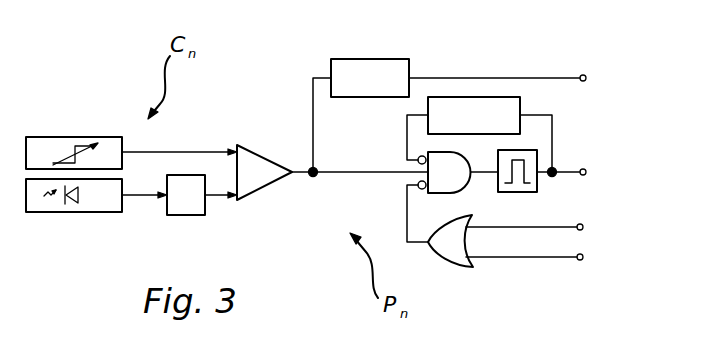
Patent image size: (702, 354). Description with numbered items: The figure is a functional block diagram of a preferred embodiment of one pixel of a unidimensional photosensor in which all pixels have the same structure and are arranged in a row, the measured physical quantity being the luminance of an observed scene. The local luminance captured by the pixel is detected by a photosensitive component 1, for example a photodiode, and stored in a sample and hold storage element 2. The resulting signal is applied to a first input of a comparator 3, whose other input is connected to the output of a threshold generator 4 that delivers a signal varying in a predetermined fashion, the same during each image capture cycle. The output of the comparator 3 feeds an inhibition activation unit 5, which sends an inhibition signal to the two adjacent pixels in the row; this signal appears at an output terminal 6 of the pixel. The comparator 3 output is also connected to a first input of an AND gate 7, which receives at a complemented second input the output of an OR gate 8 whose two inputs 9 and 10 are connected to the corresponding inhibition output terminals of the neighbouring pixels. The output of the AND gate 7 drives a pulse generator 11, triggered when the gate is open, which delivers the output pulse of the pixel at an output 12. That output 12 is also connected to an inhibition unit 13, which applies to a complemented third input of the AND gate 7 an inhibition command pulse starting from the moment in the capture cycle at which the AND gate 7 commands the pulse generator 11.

The photosensitive component 1 is at (97, 205).
The sample and hold storage element 2 is at (188, 208).
The comparator 3 is at (254, 158).
The threshold generator 4 is at (112, 141).
The inhibition activation unit 5 is at (370, 68).
The output terminal 6 is at (586, 77).
The AND gate 7 is at (462, 190).
The OR gate 8 is at (452, 254).
The input of the OR gate 9 is at (583, 227).
The input of the OR gate 10 is at (583, 257).
The pulse generator 11 is at (534, 192).
The output 12 is at (586, 172).
The inhibition unit 13 is at (508, 106).